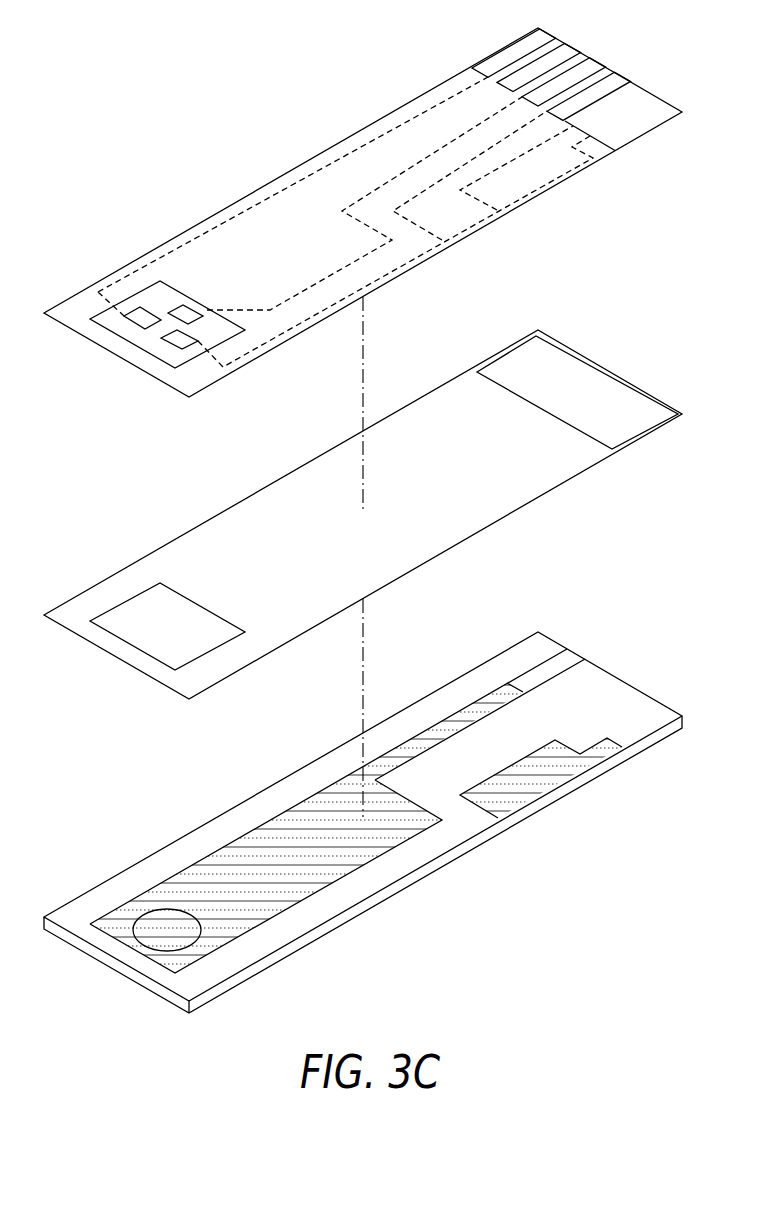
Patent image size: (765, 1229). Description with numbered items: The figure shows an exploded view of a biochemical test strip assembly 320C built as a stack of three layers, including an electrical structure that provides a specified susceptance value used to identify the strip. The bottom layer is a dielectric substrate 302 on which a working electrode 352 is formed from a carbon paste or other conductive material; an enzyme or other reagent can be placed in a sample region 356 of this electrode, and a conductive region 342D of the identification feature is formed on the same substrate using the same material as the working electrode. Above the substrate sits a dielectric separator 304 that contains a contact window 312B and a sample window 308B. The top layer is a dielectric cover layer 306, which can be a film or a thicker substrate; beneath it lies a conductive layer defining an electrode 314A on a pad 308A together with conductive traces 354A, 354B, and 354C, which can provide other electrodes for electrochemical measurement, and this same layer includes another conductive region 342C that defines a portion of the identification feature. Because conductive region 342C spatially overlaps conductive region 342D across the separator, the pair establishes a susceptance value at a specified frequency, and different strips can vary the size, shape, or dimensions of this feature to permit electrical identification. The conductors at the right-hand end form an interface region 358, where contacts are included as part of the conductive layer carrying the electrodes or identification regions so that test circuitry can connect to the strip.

The test strip assembly 320C is at (180, 66).
The interface region 358 is at (539, 17).
The dielectric cover layer 306 is at (363, 155).
The conductive trace 354A is at (288, 181).
The conductive trace 354B is at (357, 260).
The conductive trace 354C is at (337, 300).
The conductive region 342C is at (542, 180).
The electrode pad 308A is at (168, 295).
The electrode 314A is at (137, 318).
The contact window 312B is at (597, 383).
The dielectric separator 304 is at (325, 467).
The sample window 308B is at (187, 613).
The working electrode 352 is at (490, 693).
The dielectric substrate 302 is at (332, 773).
The conductive region 342D is at (540, 784).
The sample region 356 is at (162, 918).